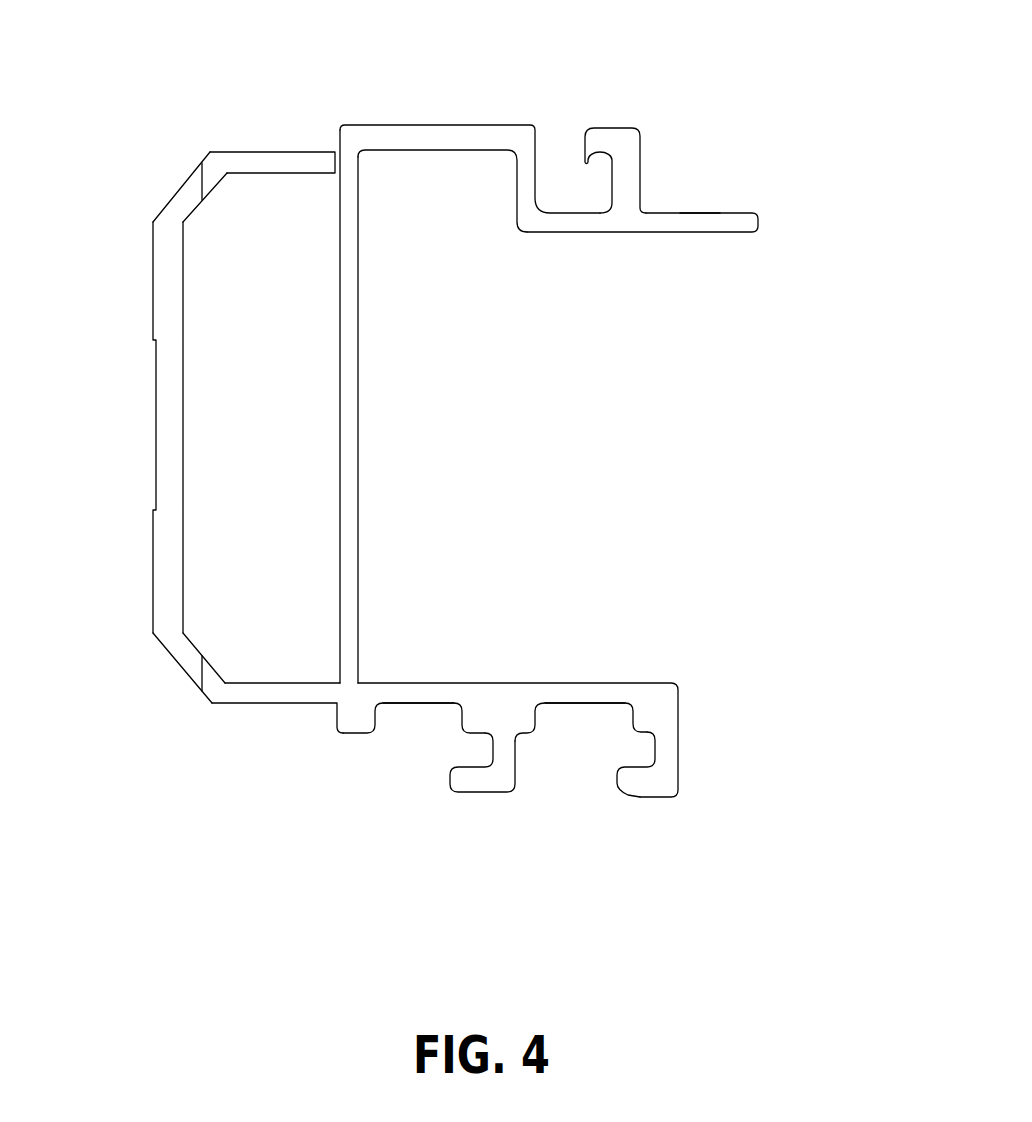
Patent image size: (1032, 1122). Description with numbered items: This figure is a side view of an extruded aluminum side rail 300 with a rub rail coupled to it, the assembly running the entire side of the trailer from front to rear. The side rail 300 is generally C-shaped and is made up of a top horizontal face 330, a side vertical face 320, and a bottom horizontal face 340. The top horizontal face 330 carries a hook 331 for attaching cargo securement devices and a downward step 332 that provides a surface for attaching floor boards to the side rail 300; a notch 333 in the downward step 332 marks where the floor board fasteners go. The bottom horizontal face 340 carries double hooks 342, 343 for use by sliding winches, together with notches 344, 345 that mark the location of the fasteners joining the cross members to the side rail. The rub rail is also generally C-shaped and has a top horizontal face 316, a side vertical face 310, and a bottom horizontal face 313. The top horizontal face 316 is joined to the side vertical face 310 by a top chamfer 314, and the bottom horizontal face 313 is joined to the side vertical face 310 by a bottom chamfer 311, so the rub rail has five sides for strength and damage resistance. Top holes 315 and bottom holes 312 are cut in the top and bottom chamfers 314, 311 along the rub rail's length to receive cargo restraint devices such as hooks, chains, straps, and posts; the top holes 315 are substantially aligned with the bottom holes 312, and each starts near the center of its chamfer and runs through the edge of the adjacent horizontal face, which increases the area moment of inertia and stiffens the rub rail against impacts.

The side rail 300 is at (475, 470).
The side vertical face 310 is at (190, 443).
The bottom chamfer 311 is at (172, 659).
The bottom holes 312 is at (197, 689).
The bottom horizontal face 313 is at (252, 703).
The top chamfer 314 is at (173, 197).
The top holes 315 is at (198, 163).
The top horizontal face 316 is at (248, 152).
The side vertical face 320 is at (359, 440).
The top horizontal face 330 is at (439, 126).
The hook 331 is at (622, 128).
The downward step 332 is at (762, 222).
The notch 333 is at (700, 213).
The bottom horizontal face 340 is at (520, 680).
The hook 342 is at (487, 792).
The hook 343 is at (653, 797).
The notch 344 is at (412, 703).
The notch 345 is at (575, 703).